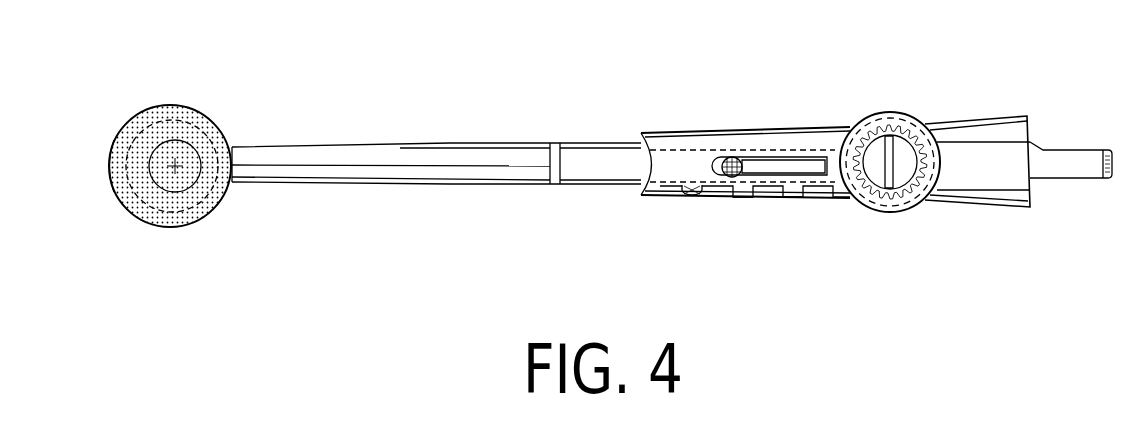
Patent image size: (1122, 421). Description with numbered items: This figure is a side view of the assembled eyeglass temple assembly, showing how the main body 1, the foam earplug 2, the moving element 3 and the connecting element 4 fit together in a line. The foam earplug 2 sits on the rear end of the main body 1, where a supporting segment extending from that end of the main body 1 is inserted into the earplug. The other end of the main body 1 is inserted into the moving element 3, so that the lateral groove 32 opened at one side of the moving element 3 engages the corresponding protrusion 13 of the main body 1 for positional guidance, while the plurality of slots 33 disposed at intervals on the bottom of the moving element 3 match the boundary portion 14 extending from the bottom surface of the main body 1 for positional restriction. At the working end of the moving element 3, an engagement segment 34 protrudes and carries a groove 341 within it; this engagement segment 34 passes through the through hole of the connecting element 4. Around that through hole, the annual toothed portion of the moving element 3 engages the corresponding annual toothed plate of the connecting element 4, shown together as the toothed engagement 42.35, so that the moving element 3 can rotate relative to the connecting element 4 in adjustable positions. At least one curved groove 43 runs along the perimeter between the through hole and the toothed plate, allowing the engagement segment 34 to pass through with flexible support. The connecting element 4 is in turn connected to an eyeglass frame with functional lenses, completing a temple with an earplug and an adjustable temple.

The main body 1 is at (402, 155).
The foam earplug 2 is at (203, 117).
The moving element 3 is at (772, 128).
The connecting element 4 is at (1020, 150).
The protrusion 13 is at (725, 160).
The boundary portion 14 is at (688, 192).
The lateral groove 32 is at (785, 170).
The slots 33 is at (698, 196).
The engagement segment 34 is at (925, 200).
The groove 341 is at (890, 192).
The annual toothed plate and annual toothed portion 42.35 is at (864, 122).
The curved groove 43 is at (928, 148).